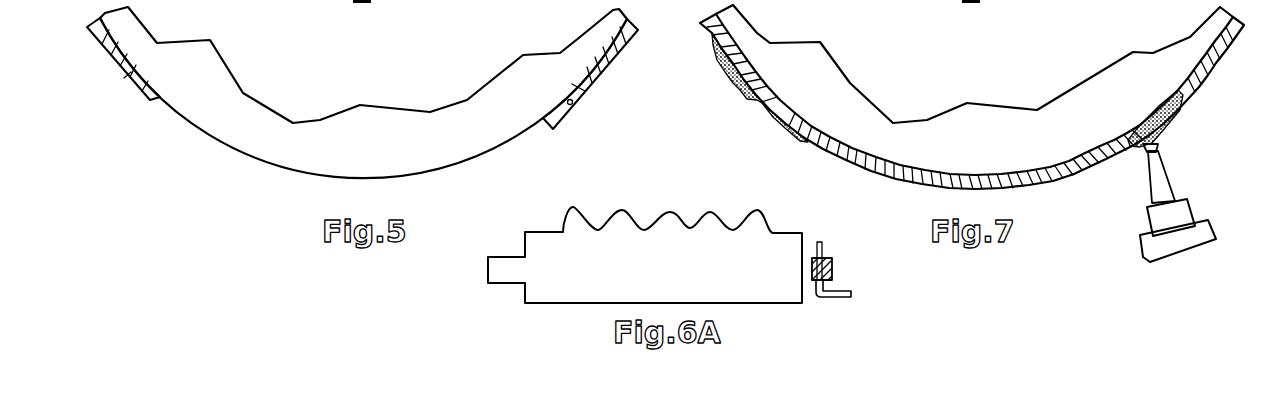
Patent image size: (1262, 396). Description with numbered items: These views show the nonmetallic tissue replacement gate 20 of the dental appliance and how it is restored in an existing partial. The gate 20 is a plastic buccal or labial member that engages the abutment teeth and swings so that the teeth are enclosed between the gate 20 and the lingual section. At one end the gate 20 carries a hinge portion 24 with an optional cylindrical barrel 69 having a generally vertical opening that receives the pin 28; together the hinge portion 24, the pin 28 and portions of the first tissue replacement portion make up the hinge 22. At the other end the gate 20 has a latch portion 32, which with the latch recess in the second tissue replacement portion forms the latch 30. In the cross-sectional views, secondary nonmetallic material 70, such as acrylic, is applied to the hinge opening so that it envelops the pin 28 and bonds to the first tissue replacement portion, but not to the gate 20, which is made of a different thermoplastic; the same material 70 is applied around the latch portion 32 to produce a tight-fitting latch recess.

In FIG. 6A, the gate 20 is at (708, 245).
In FIG. 5, the hinge 22 is at (583, 108).
In FIG. 6A, the hinge portion 24 is at (832, 268).
In FIG. 6A, the pin 28 is at (851, 297).
In FIG. 5, the latch 30 is at (115, 79).
In FIG. 6A, the latch portion 32 is at (502, 277).
In FIG. 6A, the cylindrical barrel 69 is at (813, 257).
In FIG. 7, the secondary nonmetallic material 70 is at (780, 100).